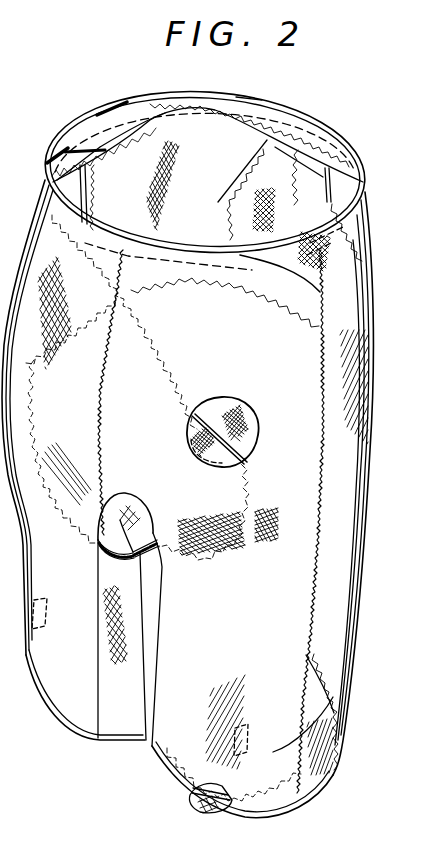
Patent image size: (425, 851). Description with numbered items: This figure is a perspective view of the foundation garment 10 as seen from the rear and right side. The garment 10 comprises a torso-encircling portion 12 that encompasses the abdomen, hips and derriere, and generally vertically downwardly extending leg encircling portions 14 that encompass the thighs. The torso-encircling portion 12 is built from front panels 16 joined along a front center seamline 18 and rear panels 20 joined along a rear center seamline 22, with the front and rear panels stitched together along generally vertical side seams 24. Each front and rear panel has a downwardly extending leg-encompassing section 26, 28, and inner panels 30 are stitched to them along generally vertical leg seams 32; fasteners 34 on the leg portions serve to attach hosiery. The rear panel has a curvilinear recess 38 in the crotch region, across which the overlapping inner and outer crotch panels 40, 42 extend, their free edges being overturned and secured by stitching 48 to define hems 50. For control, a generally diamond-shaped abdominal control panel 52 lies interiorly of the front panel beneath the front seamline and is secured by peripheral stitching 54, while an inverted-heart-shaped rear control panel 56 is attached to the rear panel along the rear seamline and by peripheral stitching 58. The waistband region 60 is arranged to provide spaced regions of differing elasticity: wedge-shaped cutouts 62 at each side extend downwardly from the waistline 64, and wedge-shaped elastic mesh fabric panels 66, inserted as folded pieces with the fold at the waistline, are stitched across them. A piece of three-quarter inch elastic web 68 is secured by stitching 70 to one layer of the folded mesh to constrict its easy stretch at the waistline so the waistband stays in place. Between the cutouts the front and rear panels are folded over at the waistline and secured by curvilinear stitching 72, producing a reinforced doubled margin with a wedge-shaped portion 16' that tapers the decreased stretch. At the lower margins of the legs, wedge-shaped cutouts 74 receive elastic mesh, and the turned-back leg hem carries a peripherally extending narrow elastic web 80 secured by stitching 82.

The garment 10 is at (93, 100).
The torso-encircling portion 12 is at (9, 308).
The leg encircling portions 14 is at (148, 758).
The front panels 16 is at (260, 453).
The wedge-shaped portion 16' is at (202, 150).
The front center seamline 18 is at (333, 697).
The rear panels 20 is at (260, 352).
The rear center seamline 22 is at (100, 410).
The side seams 24 is at (118, 167).
The leg-encompassing sections 26 is at (331, 640).
The leg-encompassing sections 28 is at (72, 659).
The inner panels 30 is at (127, 692).
The leg seams 32 is at (95, 605).
The fasteners 34 is at (44, 600).
The curvilinear recess 38 is at (120, 512).
The inner crotch panel 40 is at (160, 585).
The outer crotch panel 42 is at (120, 520).
The stitching 48 is at (133, 550).
The hems 50 is at (127, 558).
The abdominal control panel 52 is at (258, 206).
The stitching 54 is at (218, 219).
The rear control panel 56 is at (213, 453).
The stitching 58 is at (148, 345).
The waistband region 60 is at (366, 182).
The wedge-shaped cutouts 62 is at (148, 118).
The waistline 64 is at (333, 130).
The wedge-shaped elastic mesh fabric panels 66 is at (88, 142).
The elastic web 68 is at (120, 118).
The stitching 70 is at (108, 118).
The stitching 72 is at (262, 128).
The wedge-shaped cutouts 74 is at (290, 757).
The narrow elastic web 80 is at (210, 808).
The stitching 82 is at (245, 818).